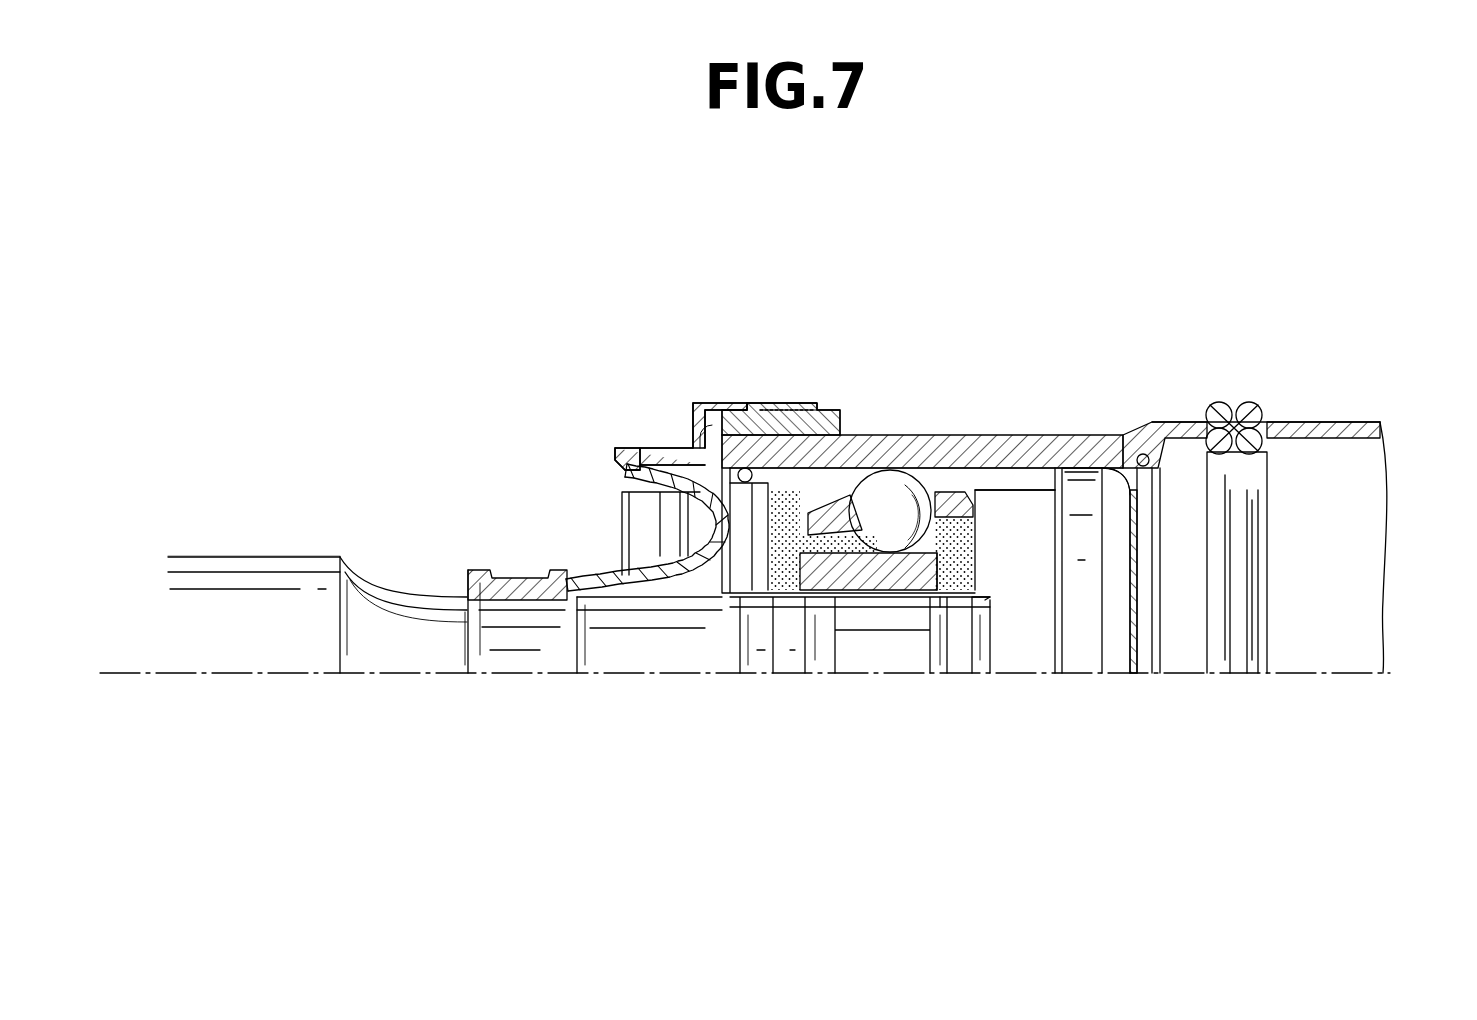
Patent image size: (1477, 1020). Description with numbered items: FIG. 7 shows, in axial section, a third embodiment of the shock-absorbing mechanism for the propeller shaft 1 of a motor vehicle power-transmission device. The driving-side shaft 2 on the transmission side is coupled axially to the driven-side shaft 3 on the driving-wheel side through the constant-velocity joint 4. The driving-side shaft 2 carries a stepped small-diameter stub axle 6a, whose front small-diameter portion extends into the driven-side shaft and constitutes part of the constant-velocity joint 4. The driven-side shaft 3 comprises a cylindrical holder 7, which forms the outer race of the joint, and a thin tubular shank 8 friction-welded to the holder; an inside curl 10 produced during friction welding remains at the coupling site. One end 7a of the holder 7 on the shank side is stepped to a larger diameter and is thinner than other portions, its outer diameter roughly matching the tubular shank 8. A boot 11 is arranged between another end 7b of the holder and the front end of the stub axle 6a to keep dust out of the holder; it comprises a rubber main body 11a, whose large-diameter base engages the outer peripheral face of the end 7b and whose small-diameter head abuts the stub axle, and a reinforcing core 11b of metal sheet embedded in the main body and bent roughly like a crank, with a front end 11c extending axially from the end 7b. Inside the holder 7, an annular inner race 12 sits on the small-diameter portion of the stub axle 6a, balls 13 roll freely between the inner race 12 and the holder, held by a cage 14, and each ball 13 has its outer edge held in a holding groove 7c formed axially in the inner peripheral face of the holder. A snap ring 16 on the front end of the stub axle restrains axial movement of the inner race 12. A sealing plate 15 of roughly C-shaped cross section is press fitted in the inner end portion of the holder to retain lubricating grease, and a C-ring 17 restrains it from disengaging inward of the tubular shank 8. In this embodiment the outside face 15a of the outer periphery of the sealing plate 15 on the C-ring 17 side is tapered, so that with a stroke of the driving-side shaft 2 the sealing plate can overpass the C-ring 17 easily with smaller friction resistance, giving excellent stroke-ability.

The propeller shaft 1 is at (500, 465).
The driving-side shaft 2 is at (295, 546).
The driven-side shaft 3 is at (1320, 400).
The constant-velocity joint 4 is at (934, 448).
The stub axle 6a is at (301, 660).
The holder 7 is at (885, 436).
The one end of holder 7a is at (1163, 425).
The another end of holder 7b is at (738, 450).
The holding groove 7c is at (993, 480).
The tubular shank 8 is at (1357, 637).
The inside curl 10 is at (1250, 456).
The boot 11 is at (722, 390).
The rubber main body 11a is at (787, 420).
The reinforcing core 11b is at (692, 443).
The front end of reinforcing core 11c is at (638, 450).
The inner race 12 is at (818, 590).
The balls 13 is at (886, 535).
The cage 14 is at (820, 505).
The sealing plate 15 is at (1083, 658).
The outside face of sealing plate 15a is at (1125, 455).
The snap ring 16 is at (943, 655).
The C-ring 17 is at (1150, 495).